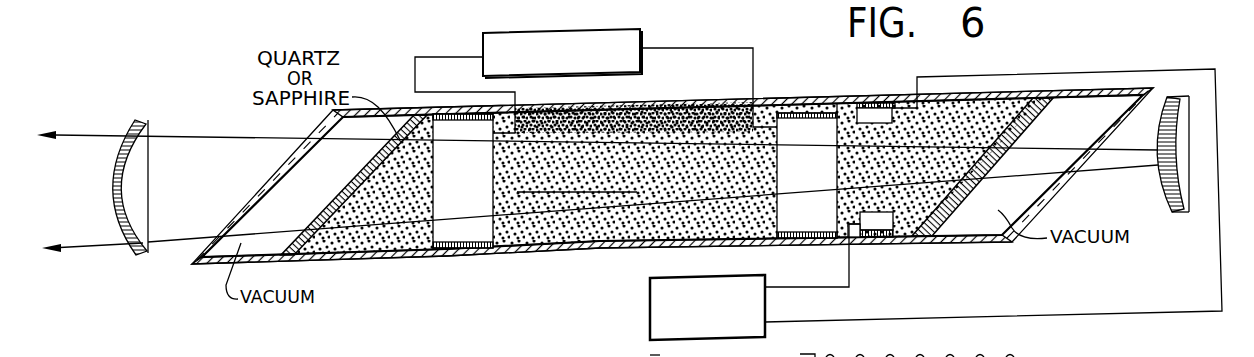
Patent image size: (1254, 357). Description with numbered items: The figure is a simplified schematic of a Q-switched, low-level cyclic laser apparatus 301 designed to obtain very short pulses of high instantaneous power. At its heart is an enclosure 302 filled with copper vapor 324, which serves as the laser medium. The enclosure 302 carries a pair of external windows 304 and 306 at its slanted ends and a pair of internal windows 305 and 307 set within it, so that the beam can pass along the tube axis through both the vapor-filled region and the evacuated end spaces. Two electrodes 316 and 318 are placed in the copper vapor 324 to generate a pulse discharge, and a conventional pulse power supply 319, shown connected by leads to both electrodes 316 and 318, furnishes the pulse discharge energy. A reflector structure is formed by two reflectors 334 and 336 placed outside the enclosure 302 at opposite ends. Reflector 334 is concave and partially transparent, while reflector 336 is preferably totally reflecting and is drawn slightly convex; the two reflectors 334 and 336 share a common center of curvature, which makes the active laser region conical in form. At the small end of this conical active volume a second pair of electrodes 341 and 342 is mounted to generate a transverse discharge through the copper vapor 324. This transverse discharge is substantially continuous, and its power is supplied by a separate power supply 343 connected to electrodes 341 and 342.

The laser apparatus 301 is at (606, 258).
The enclosure 302 is at (554, 251).
The external window 304 is at (263, 191).
The internal window 305 is at (348, 198).
The external window 306 is at (1067, 187).
The internal window 307 is at (967, 172).
The electrode 316 is at (474, 196).
The electrode 318 is at (820, 183).
The pulse power supply 319 is at (643, 42).
The copper vapor 324 is at (714, 188).
The reflector 334 is at (133, 251).
The reflector 336 is at (1187, 213).
The electrode 341 is at (897, 118).
The electrode 342 is at (893, 212).
The power supply 343 is at (753, 303).